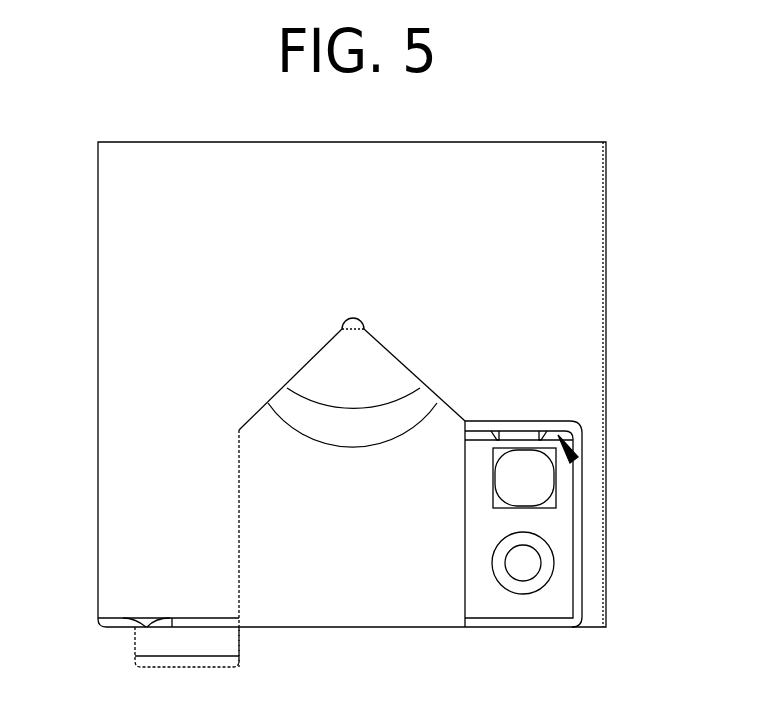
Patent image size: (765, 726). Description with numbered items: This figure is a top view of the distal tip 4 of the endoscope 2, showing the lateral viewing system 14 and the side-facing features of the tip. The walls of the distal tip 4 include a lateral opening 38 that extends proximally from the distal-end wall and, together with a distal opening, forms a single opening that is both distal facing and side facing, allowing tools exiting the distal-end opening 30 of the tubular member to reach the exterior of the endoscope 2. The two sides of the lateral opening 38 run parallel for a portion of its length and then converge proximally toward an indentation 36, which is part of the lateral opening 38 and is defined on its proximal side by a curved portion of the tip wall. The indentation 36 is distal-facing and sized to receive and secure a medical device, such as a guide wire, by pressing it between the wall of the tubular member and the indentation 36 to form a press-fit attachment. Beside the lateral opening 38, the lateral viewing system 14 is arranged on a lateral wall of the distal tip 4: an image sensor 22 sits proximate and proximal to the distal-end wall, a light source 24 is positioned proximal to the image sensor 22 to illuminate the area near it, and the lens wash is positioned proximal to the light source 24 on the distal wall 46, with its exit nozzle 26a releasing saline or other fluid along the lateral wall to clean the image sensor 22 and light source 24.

The endoscope 2 is at (672, 249).
The distal tip 4 is at (122, 220).
The lateral viewing system 14 is at (662, 538).
The image sensor 22 is at (523, 565).
The light source 24 is at (533, 487).
The exit nozzle 26a is at (520, 438).
The distal-end opening 30 is at (366, 444).
The indentation 36 is at (354, 319).
The lateral opening 38 is at (366, 552).
The distal wall 46 is at (574, 460).